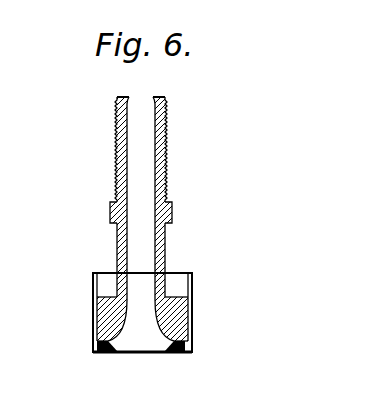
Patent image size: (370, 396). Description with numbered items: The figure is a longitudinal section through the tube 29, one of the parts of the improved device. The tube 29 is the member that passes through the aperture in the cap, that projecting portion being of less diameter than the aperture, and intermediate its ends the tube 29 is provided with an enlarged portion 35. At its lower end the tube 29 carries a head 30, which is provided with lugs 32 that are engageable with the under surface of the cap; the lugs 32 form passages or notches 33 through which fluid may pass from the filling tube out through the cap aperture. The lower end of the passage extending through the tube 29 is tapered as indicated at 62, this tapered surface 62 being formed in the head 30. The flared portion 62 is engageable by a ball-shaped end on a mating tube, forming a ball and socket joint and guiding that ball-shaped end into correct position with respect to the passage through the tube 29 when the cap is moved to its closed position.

The tube 29 is at (165, 158).
The enlarged portion 35 is at (174, 213).
The lugs 32 is at (182, 275).
The passages or notches 33 is at (104, 284).
The head 30 is at (193, 331).
The tapered surface 62 is at (127, 340).